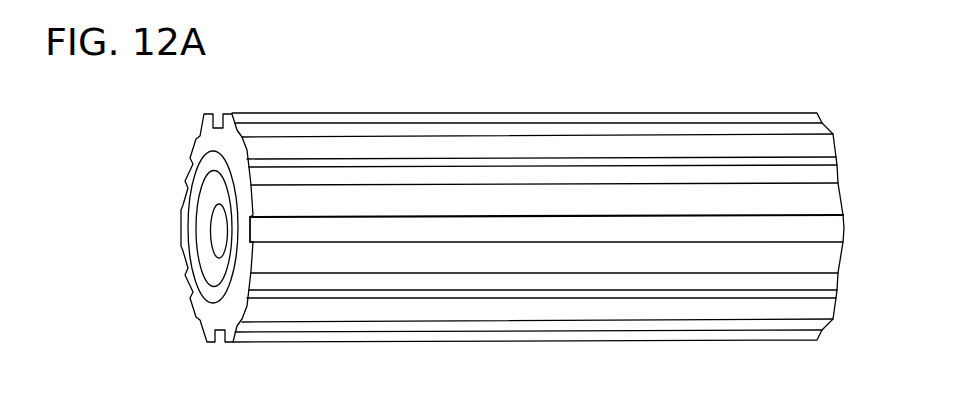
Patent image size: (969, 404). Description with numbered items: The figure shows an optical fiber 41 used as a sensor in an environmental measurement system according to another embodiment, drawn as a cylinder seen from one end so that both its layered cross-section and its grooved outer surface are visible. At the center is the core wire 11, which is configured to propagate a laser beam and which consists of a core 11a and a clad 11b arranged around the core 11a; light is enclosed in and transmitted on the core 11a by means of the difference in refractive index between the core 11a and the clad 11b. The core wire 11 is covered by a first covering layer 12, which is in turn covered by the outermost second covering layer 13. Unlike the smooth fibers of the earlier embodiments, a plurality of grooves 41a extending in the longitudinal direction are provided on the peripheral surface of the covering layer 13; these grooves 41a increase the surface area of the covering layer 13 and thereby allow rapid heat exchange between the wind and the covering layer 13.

The optical fiber 41 is at (380, 107).
The grooves 41a is at (613, 227).
The second covering layer 13 is at (201, 143).
The first covering layer 12 is at (212, 170).
The core wire 11 is at (156, 236).
The core 11a is at (213, 234).
The clad 11b is at (218, 267).